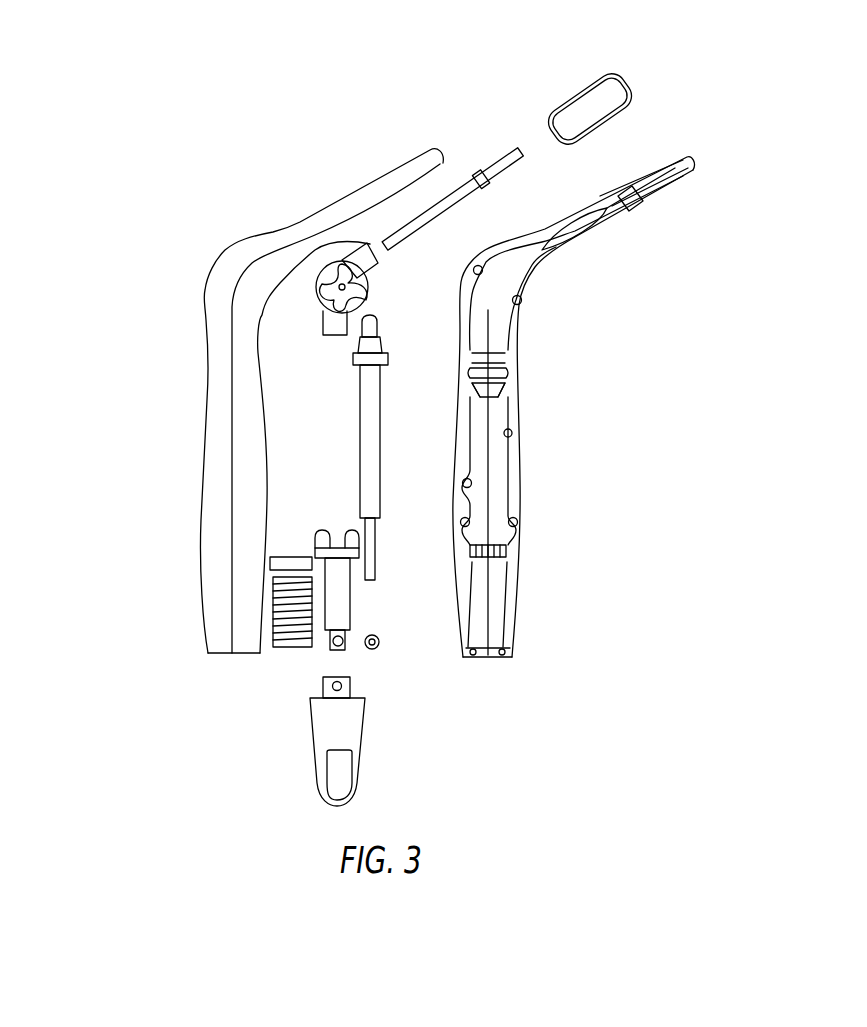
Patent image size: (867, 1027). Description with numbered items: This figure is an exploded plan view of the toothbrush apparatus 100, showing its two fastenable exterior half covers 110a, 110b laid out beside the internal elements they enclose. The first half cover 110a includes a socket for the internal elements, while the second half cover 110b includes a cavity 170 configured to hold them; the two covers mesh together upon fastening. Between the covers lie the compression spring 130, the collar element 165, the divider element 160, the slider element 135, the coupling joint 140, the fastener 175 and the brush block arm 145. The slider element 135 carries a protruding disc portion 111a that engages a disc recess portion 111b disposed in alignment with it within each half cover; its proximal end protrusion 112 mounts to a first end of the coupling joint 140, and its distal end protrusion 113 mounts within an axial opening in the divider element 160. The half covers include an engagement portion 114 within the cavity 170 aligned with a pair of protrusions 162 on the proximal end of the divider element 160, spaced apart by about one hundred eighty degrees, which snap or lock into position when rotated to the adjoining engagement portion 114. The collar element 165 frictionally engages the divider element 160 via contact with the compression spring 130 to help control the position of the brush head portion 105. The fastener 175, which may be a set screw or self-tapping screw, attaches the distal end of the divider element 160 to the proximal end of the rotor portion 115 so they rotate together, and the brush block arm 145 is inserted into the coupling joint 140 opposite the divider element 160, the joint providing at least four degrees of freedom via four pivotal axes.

The toothbrush apparatus 100 is at (124, 98).
The brush head portion 105 is at (548, 84).
The first half cover 110a is at (551, 276).
The second half cover 110b is at (198, 298).
The protruding disc portion 111a is at (388, 364).
The disc recess portion 111b is at (508, 370).
The proximal end protrusion 112 is at (388, 322).
The distal end protrusion 113 is at (378, 543).
The engagement portion 114 is at (508, 547).
The rotor portion 115 is at (370, 738).
The compression spring 130 is at (268, 605).
The slider element 135 is at (353, 418).
The coupling joint 140 is at (318, 255).
The brush block arm 145 is at (472, 140).
The divider element 160 is at (358, 597).
The pair of protrusions 162 is at (350, 528).
The collar element 165 is at (266, 562).
The cavity 170 is at (516, 450).
The fastener 175 is at (383, 654).